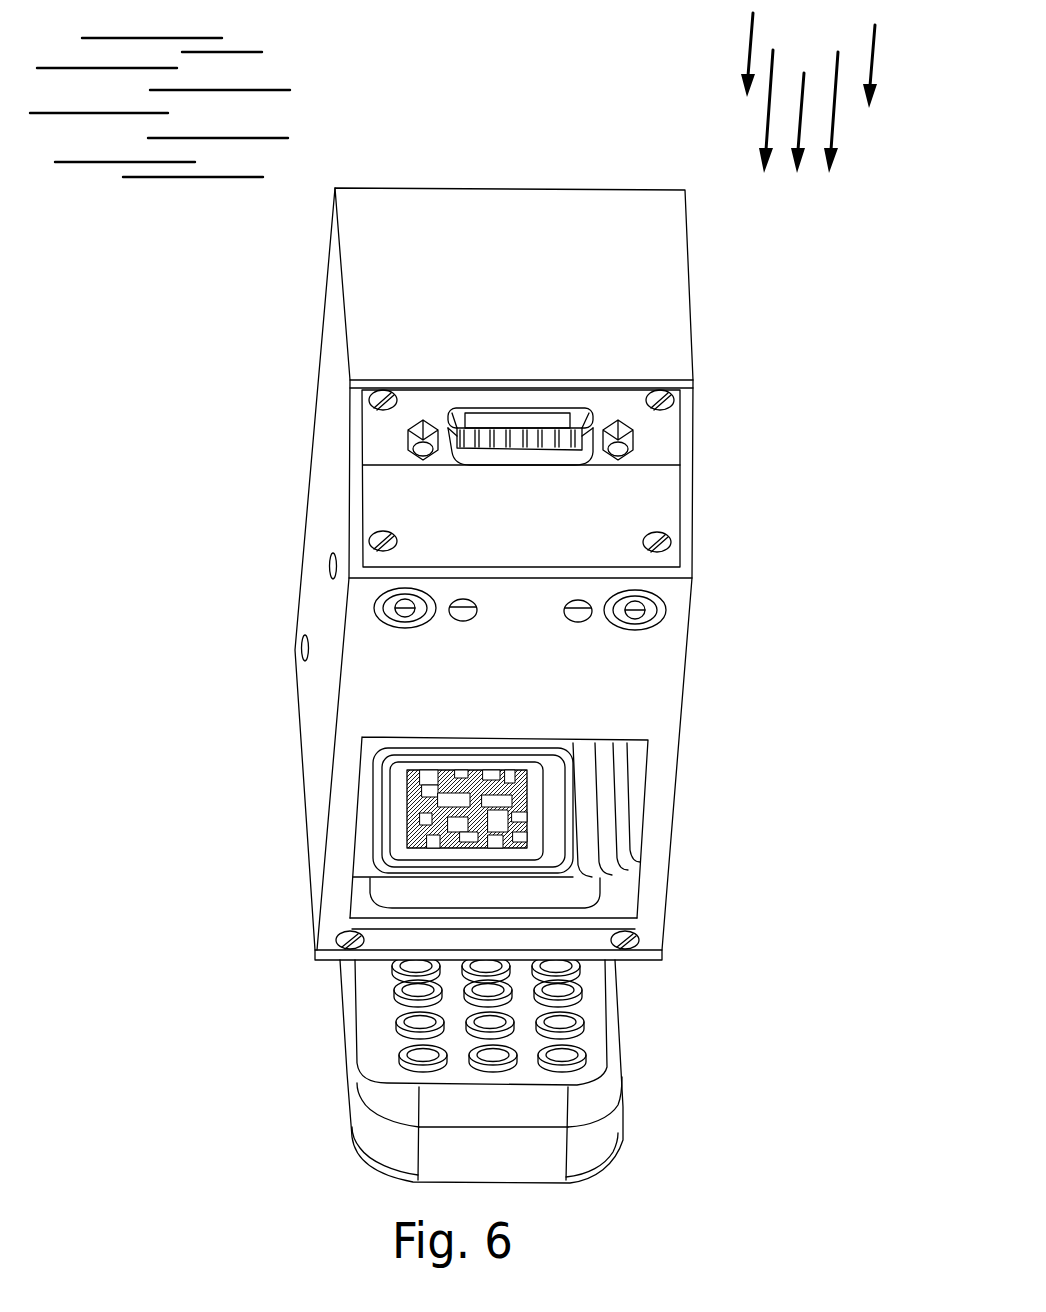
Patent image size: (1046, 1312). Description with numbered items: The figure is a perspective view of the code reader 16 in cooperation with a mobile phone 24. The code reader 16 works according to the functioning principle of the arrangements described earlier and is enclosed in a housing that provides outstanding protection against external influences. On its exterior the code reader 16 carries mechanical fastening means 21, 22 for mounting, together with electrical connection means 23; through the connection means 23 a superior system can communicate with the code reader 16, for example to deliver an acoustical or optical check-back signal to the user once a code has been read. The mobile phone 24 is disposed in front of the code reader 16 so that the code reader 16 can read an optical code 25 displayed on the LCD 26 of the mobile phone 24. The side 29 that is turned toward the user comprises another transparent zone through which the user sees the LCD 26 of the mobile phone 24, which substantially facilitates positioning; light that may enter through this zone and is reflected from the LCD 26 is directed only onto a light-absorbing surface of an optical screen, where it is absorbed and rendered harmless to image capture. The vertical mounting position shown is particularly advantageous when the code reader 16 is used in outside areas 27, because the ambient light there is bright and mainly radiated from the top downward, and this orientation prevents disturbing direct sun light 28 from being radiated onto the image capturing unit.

The code reader 16 is at (687, 243).
The mechanical fastening means 21 is at (580, 622).
The mechanical fastening means 22 is at (463, 622).
The electrical connection means 23 is at (517, 455).
The mobile phone 24 is at (623, 1128).
The optical code 25 is at (520, 788).
The LCD 26 is at (547, 850).
The outside areas 27 is at (125, 107).
The direct sun light 28 is at (825, 60).
The side turned toward the user 29 is at (541, 698).